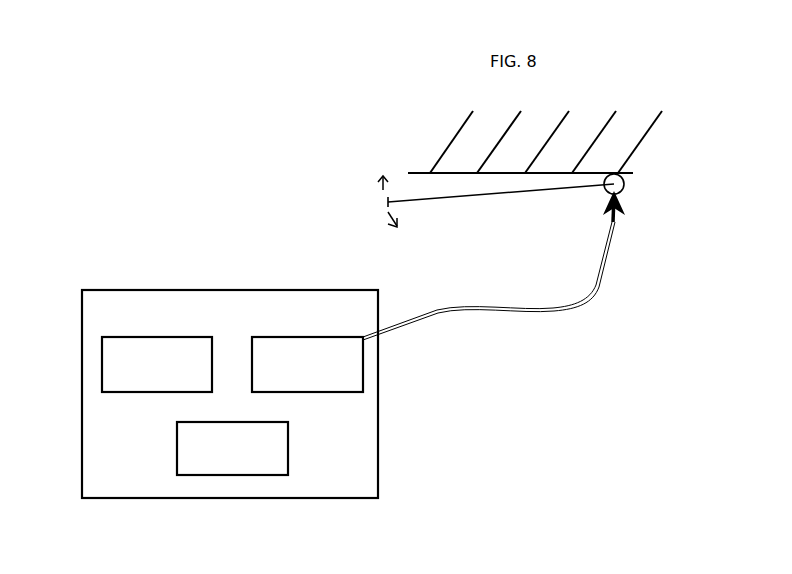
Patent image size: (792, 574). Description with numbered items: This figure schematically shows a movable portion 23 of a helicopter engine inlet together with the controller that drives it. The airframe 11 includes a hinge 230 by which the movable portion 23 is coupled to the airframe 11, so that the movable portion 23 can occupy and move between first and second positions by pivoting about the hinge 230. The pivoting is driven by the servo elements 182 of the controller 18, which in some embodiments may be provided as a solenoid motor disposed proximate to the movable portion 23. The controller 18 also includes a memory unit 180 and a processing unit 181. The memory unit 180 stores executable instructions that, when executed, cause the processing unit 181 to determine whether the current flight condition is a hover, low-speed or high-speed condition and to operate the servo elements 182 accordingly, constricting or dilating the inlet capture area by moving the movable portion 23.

The airframe 11 is at (523, 161).
The movable portion 23 is at (498, 193).
The hinge 230 is at (622, 193).
The controller 18 is at (240, 320).
The memory unit 180 is at (246, 451).
The processing unit 181 is at (171, 368).
The servo elements 182 is at (321, 368).